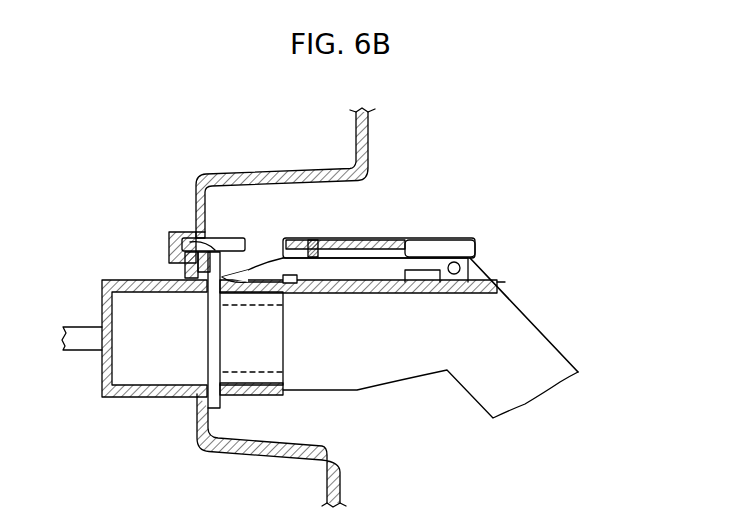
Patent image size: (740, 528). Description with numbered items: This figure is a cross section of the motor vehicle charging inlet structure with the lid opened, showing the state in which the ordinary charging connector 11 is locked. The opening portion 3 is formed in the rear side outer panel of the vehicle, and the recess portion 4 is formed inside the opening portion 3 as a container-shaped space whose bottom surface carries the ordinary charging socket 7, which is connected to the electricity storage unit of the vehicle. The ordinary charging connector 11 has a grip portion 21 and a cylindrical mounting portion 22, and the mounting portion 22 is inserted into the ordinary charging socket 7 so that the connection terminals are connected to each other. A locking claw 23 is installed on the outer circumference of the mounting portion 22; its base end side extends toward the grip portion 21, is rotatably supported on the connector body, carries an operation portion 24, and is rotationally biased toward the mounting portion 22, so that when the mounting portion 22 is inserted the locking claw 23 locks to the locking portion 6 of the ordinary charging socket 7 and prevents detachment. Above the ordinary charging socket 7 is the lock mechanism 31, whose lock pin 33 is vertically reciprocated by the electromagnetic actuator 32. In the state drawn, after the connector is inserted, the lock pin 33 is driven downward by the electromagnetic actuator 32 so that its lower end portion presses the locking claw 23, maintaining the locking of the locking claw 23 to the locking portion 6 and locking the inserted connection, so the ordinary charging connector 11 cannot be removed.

The opening portion 3 is at (370, 173).
The recess portion 4 is at (245, 186).
The locking portion 6 is at (200, 273).
The ordinary charging socket 7 is at (290, 352).
The ordinary charging connector 11 is at (488, 272).
The grip portion 21 is at (520, 325).
The mounting portion 22 is at (250, 393).
The locking claw 23 is at (258, 278).
The operation portion 24 is at (450, 238).
The lock mechanism 31 is at (207, 228).
The electromagnetic actuator 32 is at (173, 229).
The lock pin 33 is at (238, 263).